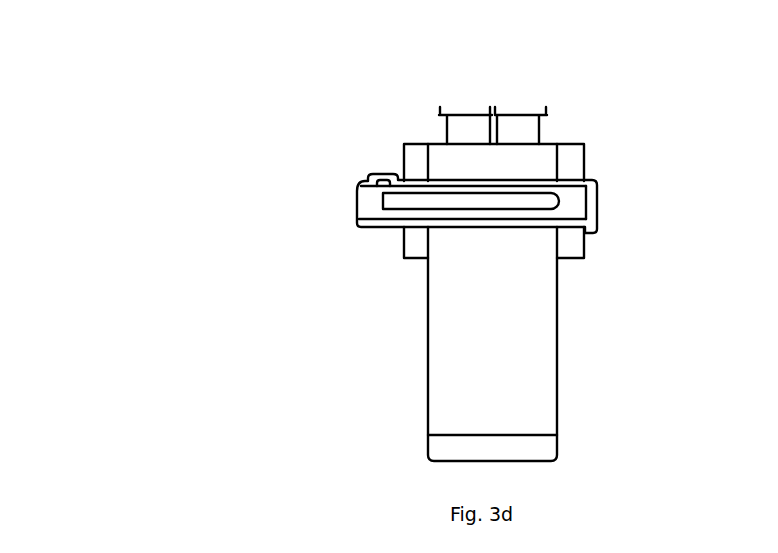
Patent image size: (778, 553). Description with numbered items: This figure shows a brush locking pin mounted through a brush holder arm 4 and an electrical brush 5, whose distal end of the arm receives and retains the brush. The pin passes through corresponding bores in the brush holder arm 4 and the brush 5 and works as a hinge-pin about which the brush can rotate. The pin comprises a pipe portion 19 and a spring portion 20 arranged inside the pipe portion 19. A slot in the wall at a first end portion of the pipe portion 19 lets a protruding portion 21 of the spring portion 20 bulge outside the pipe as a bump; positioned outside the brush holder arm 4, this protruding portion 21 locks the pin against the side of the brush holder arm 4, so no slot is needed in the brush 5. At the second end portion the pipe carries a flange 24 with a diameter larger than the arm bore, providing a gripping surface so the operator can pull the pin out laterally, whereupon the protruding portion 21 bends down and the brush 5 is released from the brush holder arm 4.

The brush holder arm 4 is at (406, 266).
The electrical brush 5 is at (561, 381).
The pipe portion 19 is at (360, 196).
The spring portion 20 is at (394, 223).
The protruding portion 21 is at (374, 162).
The flange 24 is at (602, 169).